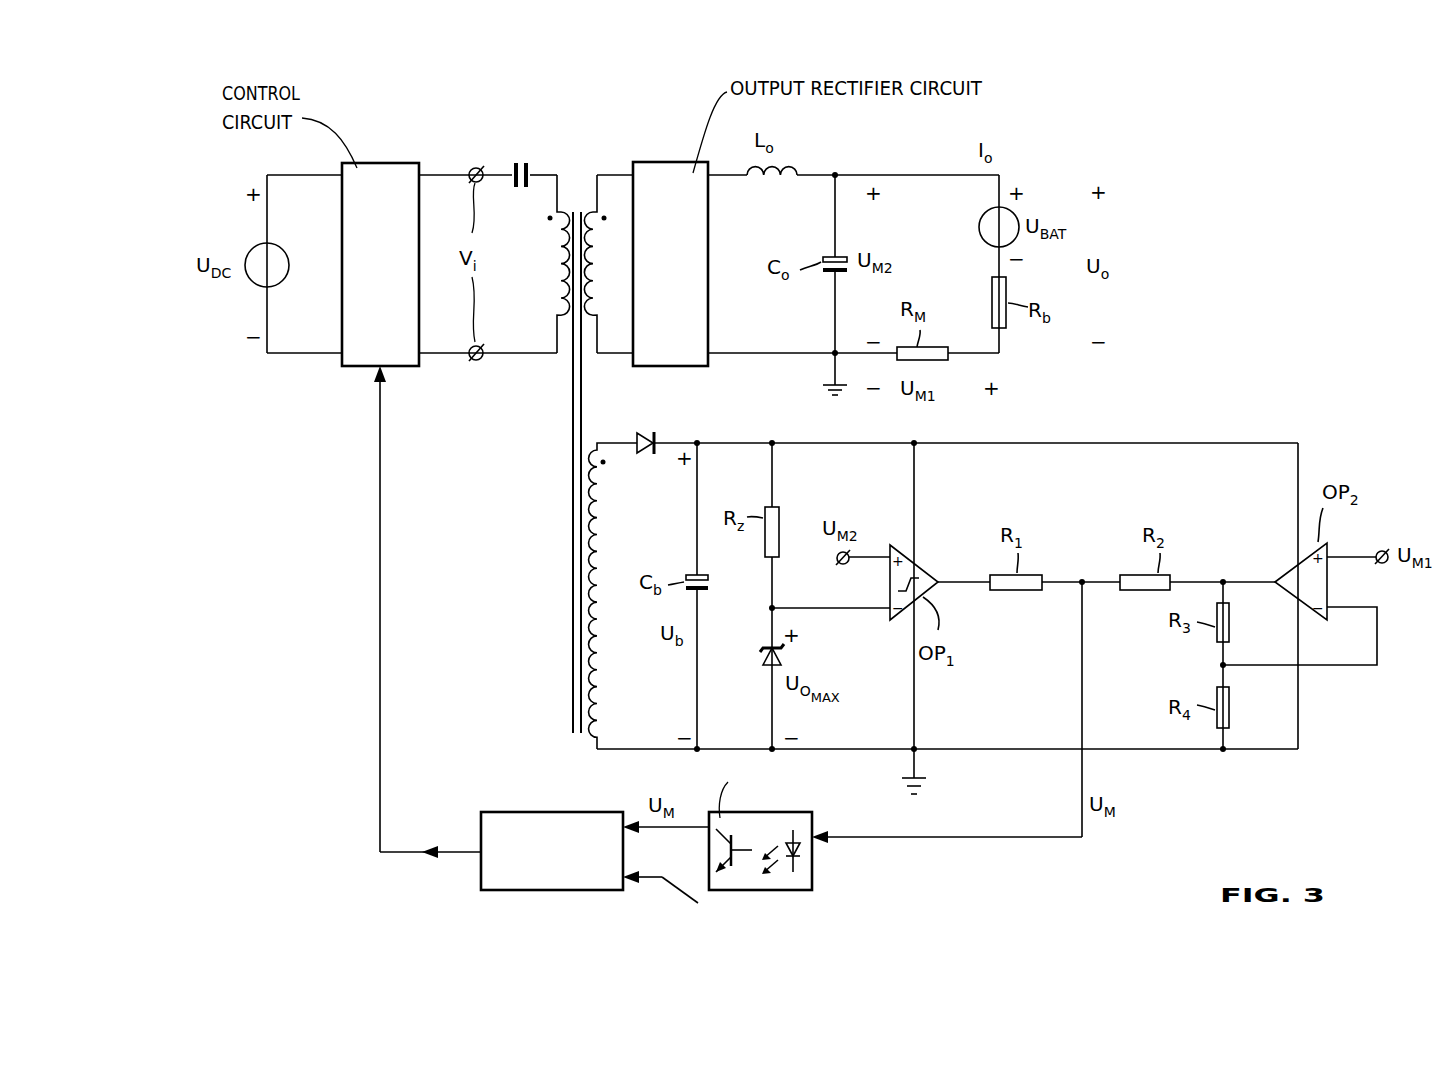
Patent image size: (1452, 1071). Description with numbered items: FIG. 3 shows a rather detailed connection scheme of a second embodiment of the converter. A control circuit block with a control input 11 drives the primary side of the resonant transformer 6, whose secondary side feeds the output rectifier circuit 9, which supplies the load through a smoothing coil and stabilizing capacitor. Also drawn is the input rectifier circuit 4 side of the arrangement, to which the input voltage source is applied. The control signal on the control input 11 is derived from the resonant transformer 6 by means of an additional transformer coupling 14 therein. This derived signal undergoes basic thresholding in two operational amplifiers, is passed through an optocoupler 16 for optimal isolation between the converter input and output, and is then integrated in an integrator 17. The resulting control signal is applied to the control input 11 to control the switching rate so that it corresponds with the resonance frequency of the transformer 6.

The input rectifier circuit 4 is at (378, 162).
The resonant transformer 6 is at (593, 125).
The output rectifier circuit 9 is at (675, 160).
The control input 11 is at (384, 372).
The additional transformer coupling 14 is at (612, 541).
The optocoupler 16 is at (813, 867).
The integrator 17 is at (505, 812).